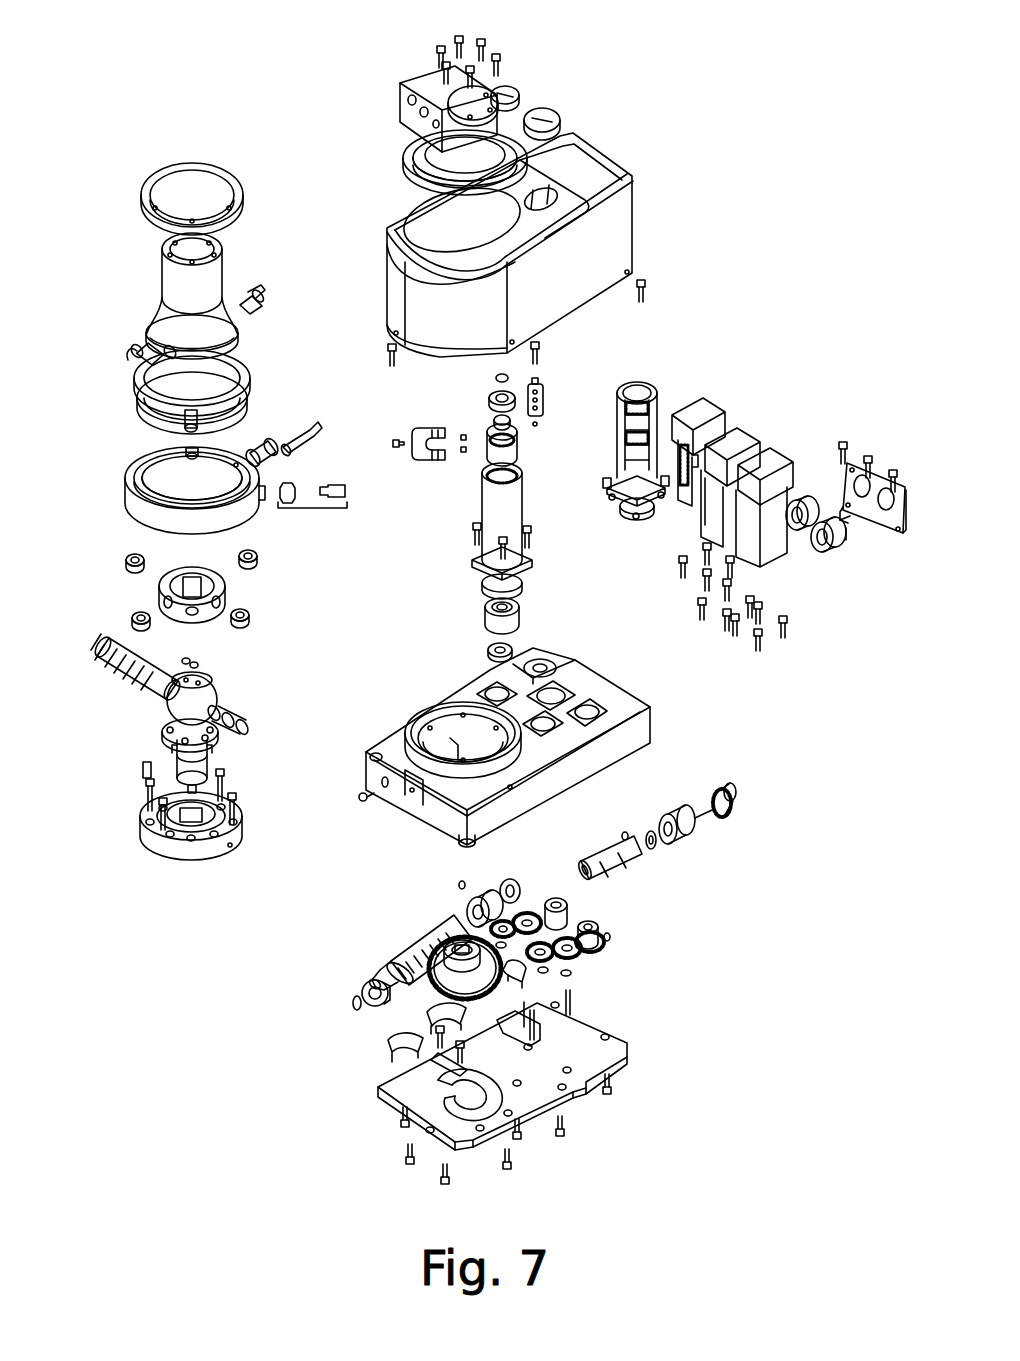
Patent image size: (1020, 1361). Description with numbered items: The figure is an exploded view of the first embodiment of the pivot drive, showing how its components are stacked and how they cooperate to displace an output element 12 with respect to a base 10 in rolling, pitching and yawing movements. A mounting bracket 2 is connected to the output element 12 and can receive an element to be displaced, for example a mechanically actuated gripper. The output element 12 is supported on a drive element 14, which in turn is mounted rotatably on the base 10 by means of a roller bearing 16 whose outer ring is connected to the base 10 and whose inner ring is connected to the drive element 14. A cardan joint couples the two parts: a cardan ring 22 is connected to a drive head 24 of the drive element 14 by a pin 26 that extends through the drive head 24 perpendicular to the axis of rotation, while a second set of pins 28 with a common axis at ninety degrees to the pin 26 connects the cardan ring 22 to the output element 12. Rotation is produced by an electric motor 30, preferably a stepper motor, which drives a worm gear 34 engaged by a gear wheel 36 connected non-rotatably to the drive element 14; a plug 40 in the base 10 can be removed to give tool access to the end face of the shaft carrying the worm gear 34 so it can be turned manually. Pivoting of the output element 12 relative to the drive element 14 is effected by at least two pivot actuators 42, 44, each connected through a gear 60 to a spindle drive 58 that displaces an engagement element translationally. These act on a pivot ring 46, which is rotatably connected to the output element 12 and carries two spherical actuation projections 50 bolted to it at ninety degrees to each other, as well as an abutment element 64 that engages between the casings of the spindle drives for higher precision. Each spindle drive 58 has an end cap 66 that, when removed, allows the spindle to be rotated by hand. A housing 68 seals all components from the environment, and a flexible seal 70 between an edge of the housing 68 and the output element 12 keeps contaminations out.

The mounting bracket 2 is at (403, 116).
The base 10 is at (633, 730).
The output element 12 is at (215, 287).
The drive element 14 is at (200, 762).
The roller bearing 16 is at (253, 830).
The cardan ring 22 is at (228, 596).
The drive head 24 is at (215, 690).
The pin 26 is at (128, 673).
The second pins 28 is at (143, 348).
The electric motor 30 is at (724, 412).
The worm gear 34 is at (428, 935).
The gear wheel 36 is at (430, 985).
The plug 40 is at (362, 812).
The pivot actuator 42 is at (745, 432).
The pivot actuator 44 is at (782, 455).
The pivot ring 46 is at (137, 510).
The actuation projections 50 is at (312, 514).
The spindle drive 58 is at (545, 485).
The gear 60 is at (632, 916).
The abutment element 64 is at (280, 455).
The end cap 66 is at (525, 110).
The housing 68 is at (598, 176).
The flexible seal 70 is at (407, 143).